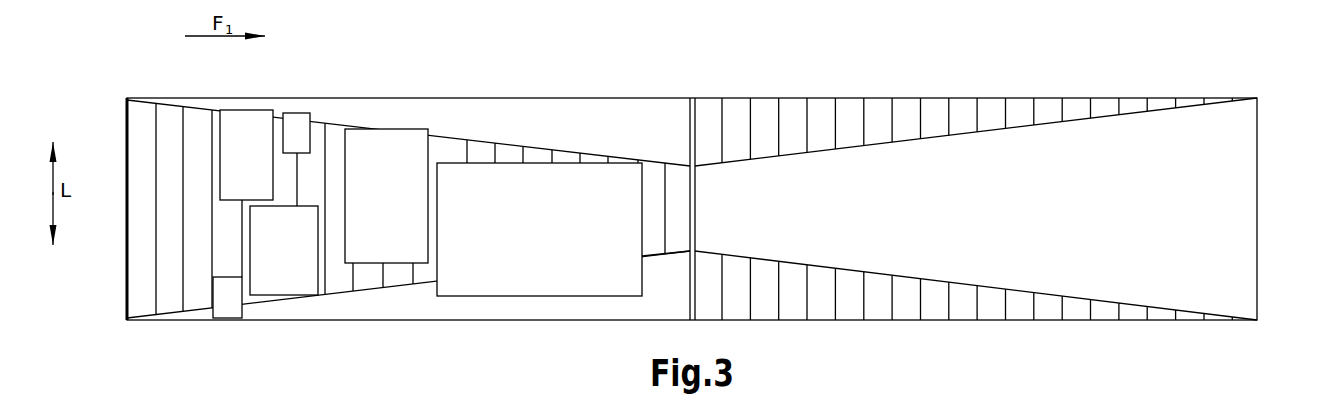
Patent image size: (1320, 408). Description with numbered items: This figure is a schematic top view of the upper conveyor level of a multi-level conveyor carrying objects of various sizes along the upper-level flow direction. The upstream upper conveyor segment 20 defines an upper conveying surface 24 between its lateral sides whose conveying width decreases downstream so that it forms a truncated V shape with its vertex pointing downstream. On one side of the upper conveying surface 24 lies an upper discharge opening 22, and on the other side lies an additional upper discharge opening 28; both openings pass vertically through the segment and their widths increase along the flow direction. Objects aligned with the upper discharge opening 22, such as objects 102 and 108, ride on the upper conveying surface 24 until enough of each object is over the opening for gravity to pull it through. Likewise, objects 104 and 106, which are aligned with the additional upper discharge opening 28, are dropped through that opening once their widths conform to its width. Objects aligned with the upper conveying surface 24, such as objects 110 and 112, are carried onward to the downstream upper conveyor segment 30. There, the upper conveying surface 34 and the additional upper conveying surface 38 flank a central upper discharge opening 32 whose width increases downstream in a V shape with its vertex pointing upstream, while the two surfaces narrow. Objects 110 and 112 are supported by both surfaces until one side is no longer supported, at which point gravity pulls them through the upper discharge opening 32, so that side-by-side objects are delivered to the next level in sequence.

The upper conveyor segment 20 is at (507, 83).
The upper discharge opening 22 is at (568, 132).
The upper conveying surface 24 is at (648, 217).
The additional upper discharge opening 28 is at (660, 288).
The upper conveyor segment 30 is at (1001, 191).
The upper discharge opening 32 is at (1188, 207).
The upper conveying surface 34 is at (958, 120).
The additional upper conveying surface 38 is at (1017, 302).
The object 102 is at (245, 142).
The object 104 is at (222, 299).
The object 106 is at (293, 269).
The object 108 is at (293, 125).
The object 110 is at (388, 155).
The object 112 is at (545, 253).